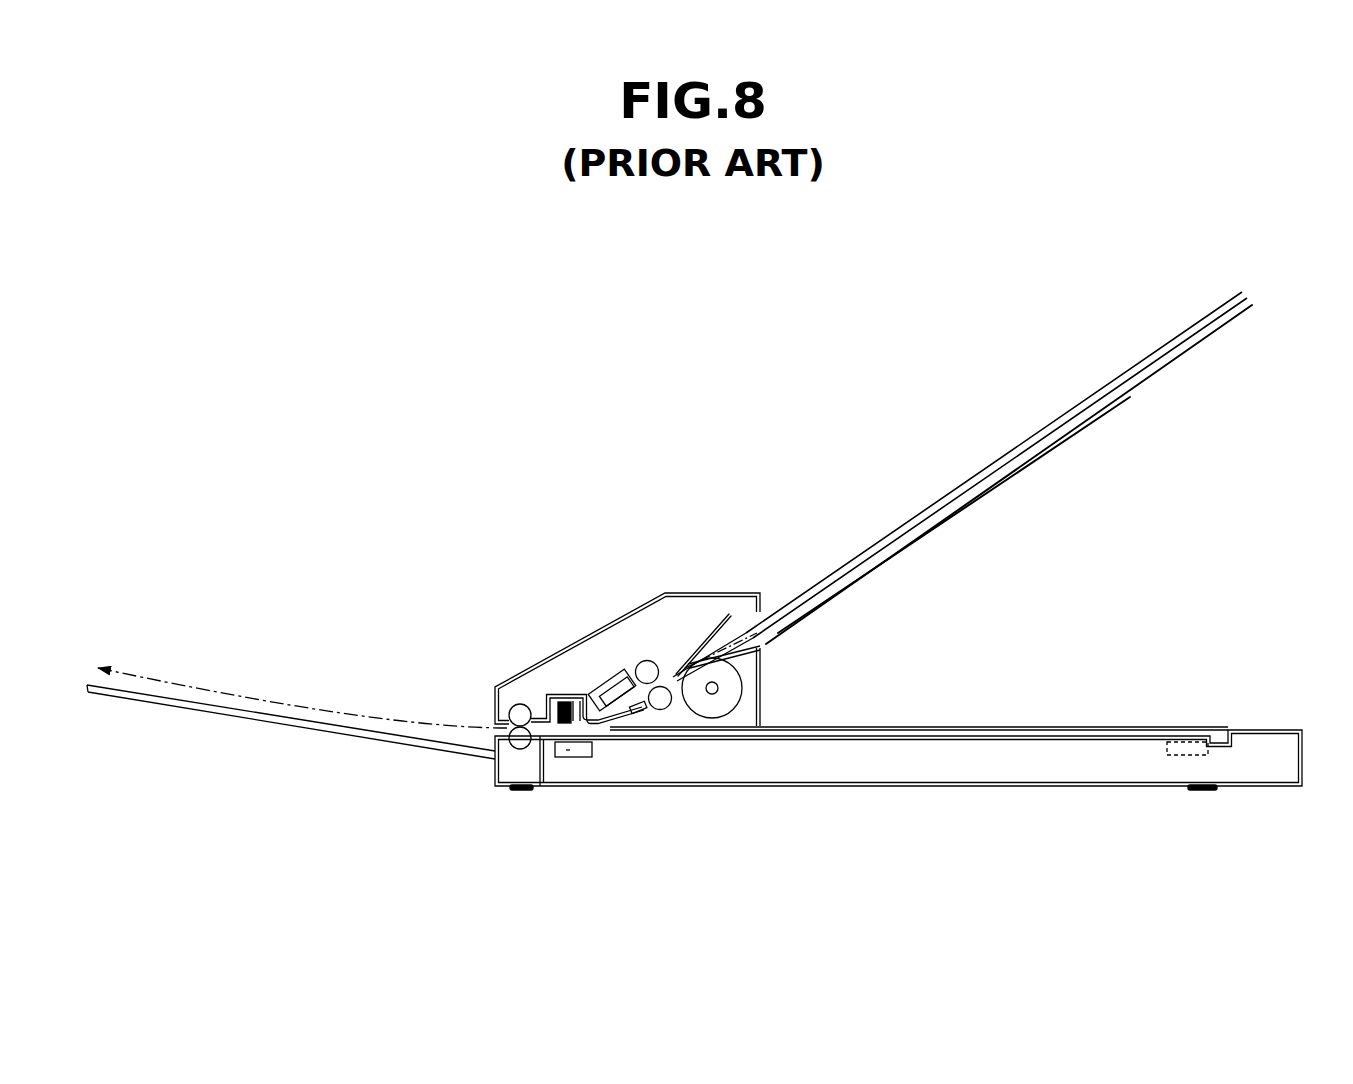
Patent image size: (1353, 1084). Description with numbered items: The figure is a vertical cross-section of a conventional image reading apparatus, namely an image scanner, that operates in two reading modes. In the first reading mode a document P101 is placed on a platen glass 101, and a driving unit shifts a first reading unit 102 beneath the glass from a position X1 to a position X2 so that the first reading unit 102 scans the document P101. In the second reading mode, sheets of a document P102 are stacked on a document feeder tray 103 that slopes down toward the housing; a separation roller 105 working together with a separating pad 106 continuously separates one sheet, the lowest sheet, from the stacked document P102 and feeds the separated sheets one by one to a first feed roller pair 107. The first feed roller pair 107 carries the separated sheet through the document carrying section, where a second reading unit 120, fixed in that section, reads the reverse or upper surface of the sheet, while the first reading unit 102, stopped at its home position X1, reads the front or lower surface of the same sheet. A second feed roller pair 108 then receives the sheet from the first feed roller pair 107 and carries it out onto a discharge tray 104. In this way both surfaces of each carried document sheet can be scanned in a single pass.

The platen glass 101 is at (947, 741).
The document P101 is at (1163, 727).
The discharge tray 104 is at (337, 734).
The second feed roller pair 108 is at (509, 730).
The first reading unit 102 is at (588, 759).
The position X1 is at (568, 750).
The position X2 is at (1177, 758).
The second reading unit 120 is at (599, 679).
The first feed roller pair 107 is at (656, 662).
The separating pad 106 is at (736, 607).
The separation roller 105 is at (723, 701).
The document feeder tray 103 is at (1065, 448).
The document P102 is at (1173, 332).